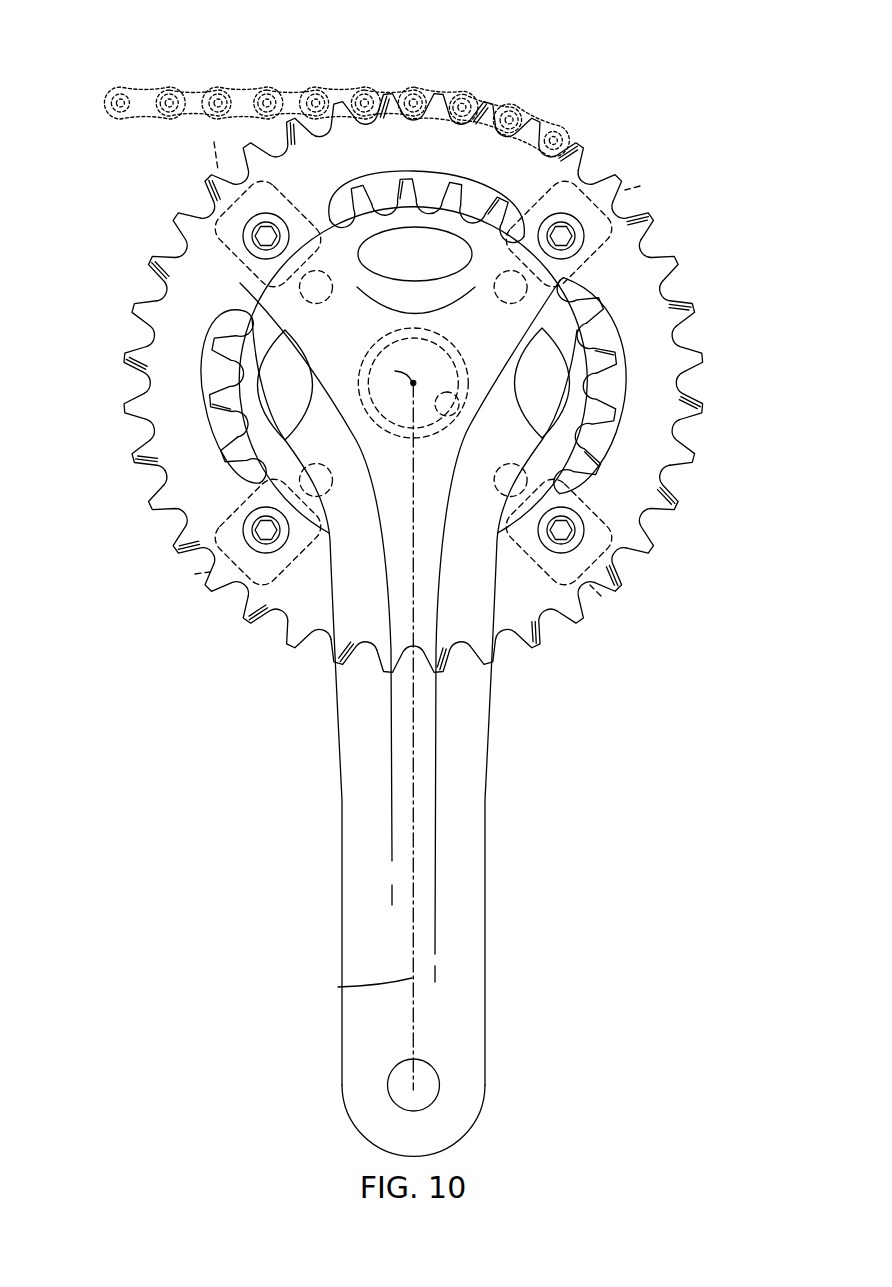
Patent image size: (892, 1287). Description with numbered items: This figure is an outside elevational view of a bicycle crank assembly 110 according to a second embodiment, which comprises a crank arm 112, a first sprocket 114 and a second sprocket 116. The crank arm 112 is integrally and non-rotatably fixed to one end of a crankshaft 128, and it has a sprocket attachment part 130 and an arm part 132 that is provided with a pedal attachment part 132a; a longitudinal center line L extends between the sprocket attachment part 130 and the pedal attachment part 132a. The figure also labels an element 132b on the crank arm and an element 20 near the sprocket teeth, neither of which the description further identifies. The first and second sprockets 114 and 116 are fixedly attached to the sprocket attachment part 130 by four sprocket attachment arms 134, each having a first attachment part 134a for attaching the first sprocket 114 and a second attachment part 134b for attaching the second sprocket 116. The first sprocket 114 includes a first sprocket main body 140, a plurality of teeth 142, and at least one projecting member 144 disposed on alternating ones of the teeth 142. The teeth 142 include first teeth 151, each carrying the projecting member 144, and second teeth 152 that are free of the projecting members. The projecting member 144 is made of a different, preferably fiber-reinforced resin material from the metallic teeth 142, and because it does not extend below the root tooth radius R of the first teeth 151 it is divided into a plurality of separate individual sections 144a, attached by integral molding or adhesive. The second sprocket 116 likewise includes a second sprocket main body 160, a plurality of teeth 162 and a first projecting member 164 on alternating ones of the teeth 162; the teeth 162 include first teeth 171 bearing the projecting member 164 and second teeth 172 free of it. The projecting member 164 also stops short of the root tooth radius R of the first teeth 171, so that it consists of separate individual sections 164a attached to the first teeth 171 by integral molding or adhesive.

The chain 20 is at (141, 121).
The bicycle crank assembly 110 is at (660, 110).
The crank arm 112 is at (490, 795).
The first sprocket 114 is at (650, 242).
The second sprocket 116 is at (584, 447).
The crankshaft 128 is at (393, 443).
The sprocket attachment part 130 is at (500, 388).
The arm part 132 is at (362, 707).
The pedal attachment part 132a is at (449, 1107).
The crank axle mounting hole 132b is at (416, 438).
The sprocket attachment arms 134 is at (493, 258).
The first attachment part 134a is at (417, 366).
The second attachment part 134b is at (331, 302).
The first sprocket main body 140 is at (180, 418).
The teeth 142 is at (122, 383).
The projecting member 144 is at (78, 483).
The separate individual sections 144a is at (143, 468).
The first teeth 151 is at (291, 118).
The second teeth 152 is at (247, 140).
The second sprocket main body 160 is at (380, 271).
The teeth 162 is at (205, 337).
The first projecting member 164 is at (448, 50).
The separate individual sections 164a is at (410, 197).
The first teeth 171 is at (407, 177).
The second teeth 172 is at (357, 185).